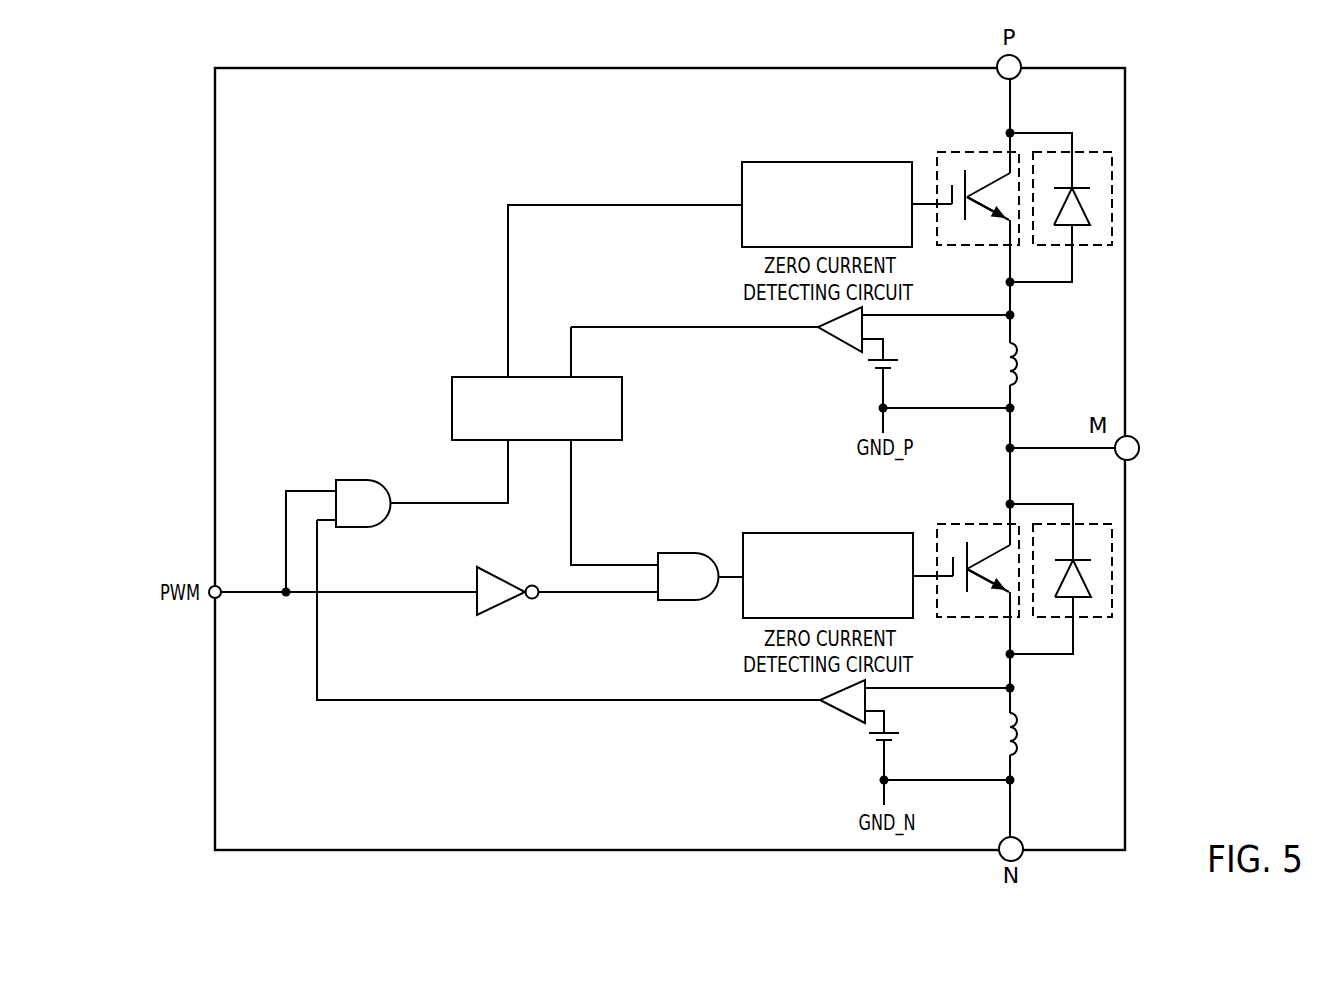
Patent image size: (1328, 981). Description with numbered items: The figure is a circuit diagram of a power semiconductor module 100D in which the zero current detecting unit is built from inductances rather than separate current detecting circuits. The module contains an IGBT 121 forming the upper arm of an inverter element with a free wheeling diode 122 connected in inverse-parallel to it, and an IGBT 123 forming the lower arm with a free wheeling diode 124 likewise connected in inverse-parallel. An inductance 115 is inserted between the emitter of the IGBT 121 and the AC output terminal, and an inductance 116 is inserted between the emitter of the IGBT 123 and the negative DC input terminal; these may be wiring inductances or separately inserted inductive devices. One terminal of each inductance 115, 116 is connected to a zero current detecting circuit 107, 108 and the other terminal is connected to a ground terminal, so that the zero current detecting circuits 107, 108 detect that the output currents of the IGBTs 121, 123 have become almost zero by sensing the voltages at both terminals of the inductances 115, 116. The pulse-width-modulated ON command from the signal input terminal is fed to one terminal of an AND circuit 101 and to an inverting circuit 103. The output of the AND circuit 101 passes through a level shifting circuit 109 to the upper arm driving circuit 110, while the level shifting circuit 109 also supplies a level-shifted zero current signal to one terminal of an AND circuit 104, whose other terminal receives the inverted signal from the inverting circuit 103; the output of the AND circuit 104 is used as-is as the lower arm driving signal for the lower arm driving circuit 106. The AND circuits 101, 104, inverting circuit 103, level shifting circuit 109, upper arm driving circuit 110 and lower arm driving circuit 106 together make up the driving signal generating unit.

The power semiconductor module 100D is at (280, 86).
The AND circuit 101 is at (350, 489).
The inverting circuit 103 is at (503, 599).
The AND circuit 104 is at (673, 561).
The lower arm driving circuit 106 is at (868, 543).
The zero current detecting circuit 107 is at (840, 332).
The zero current detecting circuit 108 is at (842, 704).
The level shifting circuit 109 is at (458, 385).
The upper arm driving circuit 110 is at (868, 171).
The inductance 115 is at (1017, 363).
The inductance 116 is at (1017, 729).
The IGBT 121 is at (958, 152).
The free wheeling diode 122 is at (1084, 152).
The IGBT 123 is at (959, 524).
The free wheeling diode 124 is at (1085, 524).